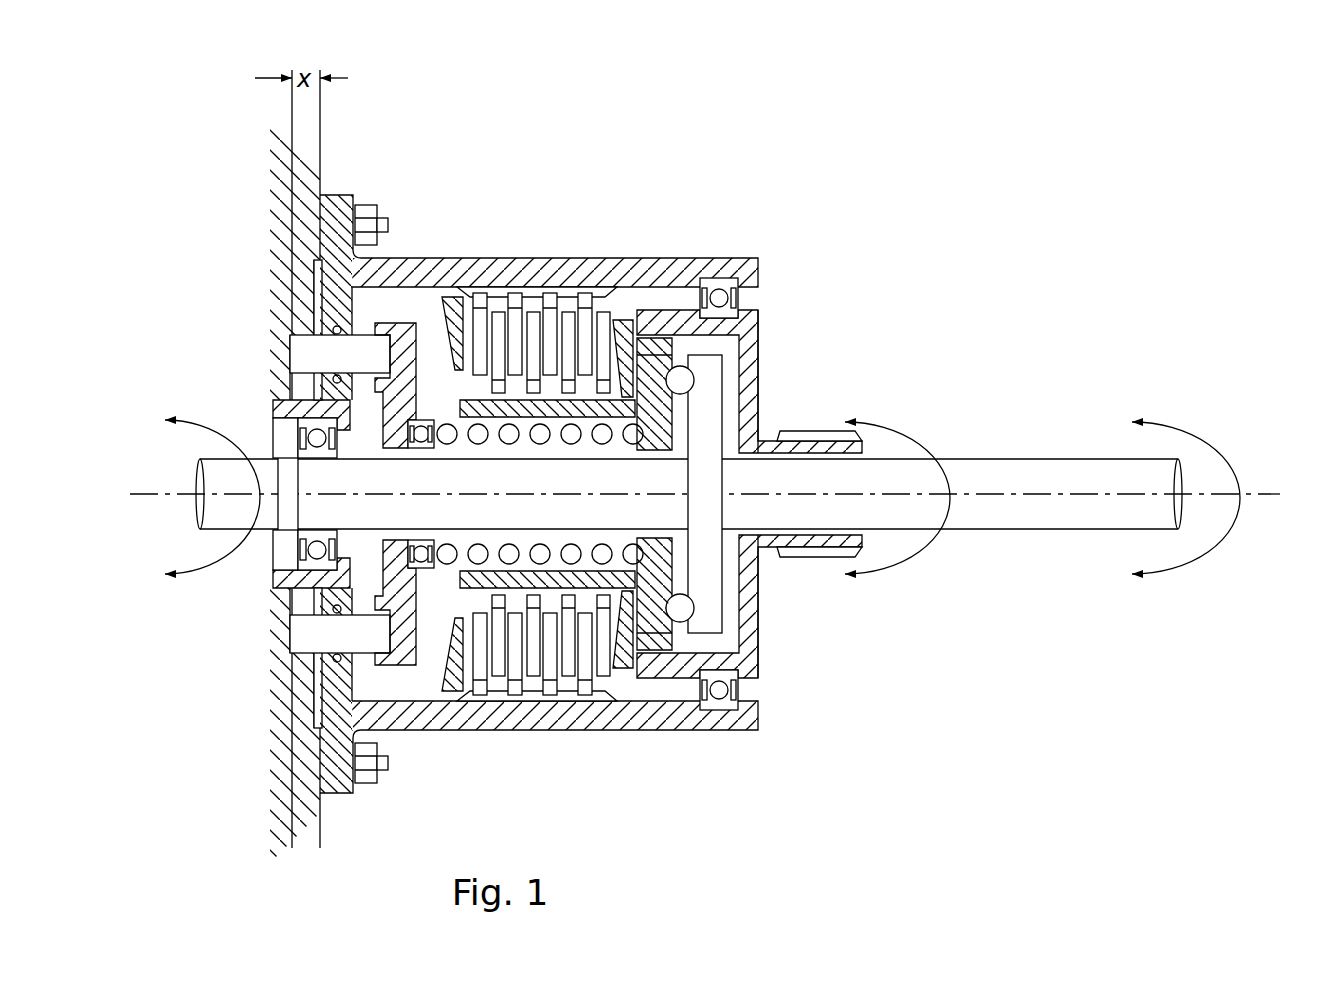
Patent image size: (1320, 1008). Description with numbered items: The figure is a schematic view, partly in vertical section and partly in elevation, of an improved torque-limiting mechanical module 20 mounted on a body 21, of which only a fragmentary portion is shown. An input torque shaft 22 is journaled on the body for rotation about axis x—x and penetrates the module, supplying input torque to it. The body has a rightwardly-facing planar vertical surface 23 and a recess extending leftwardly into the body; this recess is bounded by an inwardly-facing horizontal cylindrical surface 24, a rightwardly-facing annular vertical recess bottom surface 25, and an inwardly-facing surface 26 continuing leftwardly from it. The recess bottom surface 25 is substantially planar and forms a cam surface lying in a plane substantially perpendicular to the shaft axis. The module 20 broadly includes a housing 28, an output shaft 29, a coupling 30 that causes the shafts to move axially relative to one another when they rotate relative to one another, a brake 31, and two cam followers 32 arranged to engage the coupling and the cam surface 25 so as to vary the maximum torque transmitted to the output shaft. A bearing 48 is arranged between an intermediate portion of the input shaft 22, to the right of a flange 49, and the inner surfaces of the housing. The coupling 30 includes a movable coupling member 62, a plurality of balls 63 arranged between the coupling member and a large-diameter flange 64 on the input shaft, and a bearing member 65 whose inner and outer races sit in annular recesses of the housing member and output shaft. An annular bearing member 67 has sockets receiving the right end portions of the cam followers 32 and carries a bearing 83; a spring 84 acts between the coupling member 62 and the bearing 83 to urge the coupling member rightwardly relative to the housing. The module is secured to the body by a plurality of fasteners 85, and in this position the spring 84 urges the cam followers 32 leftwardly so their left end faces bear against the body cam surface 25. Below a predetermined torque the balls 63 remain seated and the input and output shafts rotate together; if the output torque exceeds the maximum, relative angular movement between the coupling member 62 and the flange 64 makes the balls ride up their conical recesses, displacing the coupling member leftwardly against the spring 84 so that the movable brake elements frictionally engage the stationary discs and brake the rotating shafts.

The mechanical module 20 is at (660, 504).
The body 21 is at (275, 190).
The input torque shaft 22 is at (972, 518).
The planar vertical surface 23 is at (322, 140).
The horizontal cylindrical surface 24 is at (290, 628).
The recess bottom surface 25 is at (305, 356).
The inwardly-facing surface 26 is at (266, 578).
The housing 28 is at (642, 257).
The output shaft 29 is at (762, 617).
The coupling 30 is at (676, 410).
The brake 31 is at (550, 393).
The cam followers 32 is at (292, 325).
The bearing 48 is at (325, 455).
The flange 49 is at (296, 482).
The movable coupling member 62 is at (617, 410).
The balls 63 is at (702, 372).
The large-diameter flange 64 is at (730, 418).
The bearing member 65 is at (733, 713).
The bearing member 67 is at (397, 668).
The bearing 83 is at (433, 550).
The spring 84 is at (535, 553).
The fasteners 85 is at (383, 205).